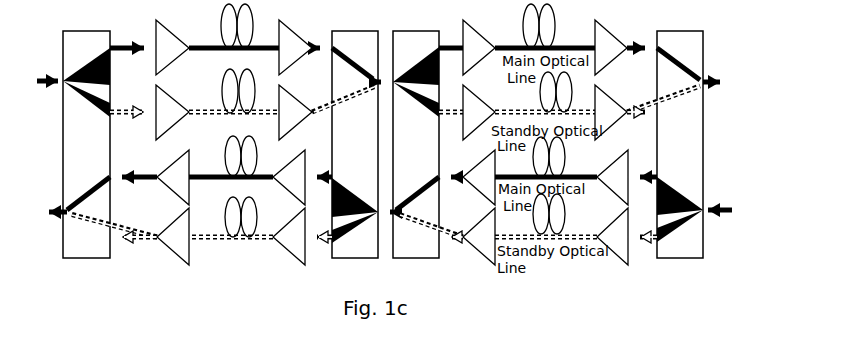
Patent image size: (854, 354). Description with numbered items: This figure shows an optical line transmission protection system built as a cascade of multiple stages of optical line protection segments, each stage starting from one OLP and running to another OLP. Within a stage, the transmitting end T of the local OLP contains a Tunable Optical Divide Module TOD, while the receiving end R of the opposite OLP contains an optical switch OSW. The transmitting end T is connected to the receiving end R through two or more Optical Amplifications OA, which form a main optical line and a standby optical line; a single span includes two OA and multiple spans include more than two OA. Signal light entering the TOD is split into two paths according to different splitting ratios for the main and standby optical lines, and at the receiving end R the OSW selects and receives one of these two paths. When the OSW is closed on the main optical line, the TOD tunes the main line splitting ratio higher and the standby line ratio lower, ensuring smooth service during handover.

The Tunable Optical Divide Module TOD is at (111, 70).
The optical switch OSW is at (384, 142).
The Optical Amplification OA is at (392, 142).
The optical line protection OLP is at (383, 144).